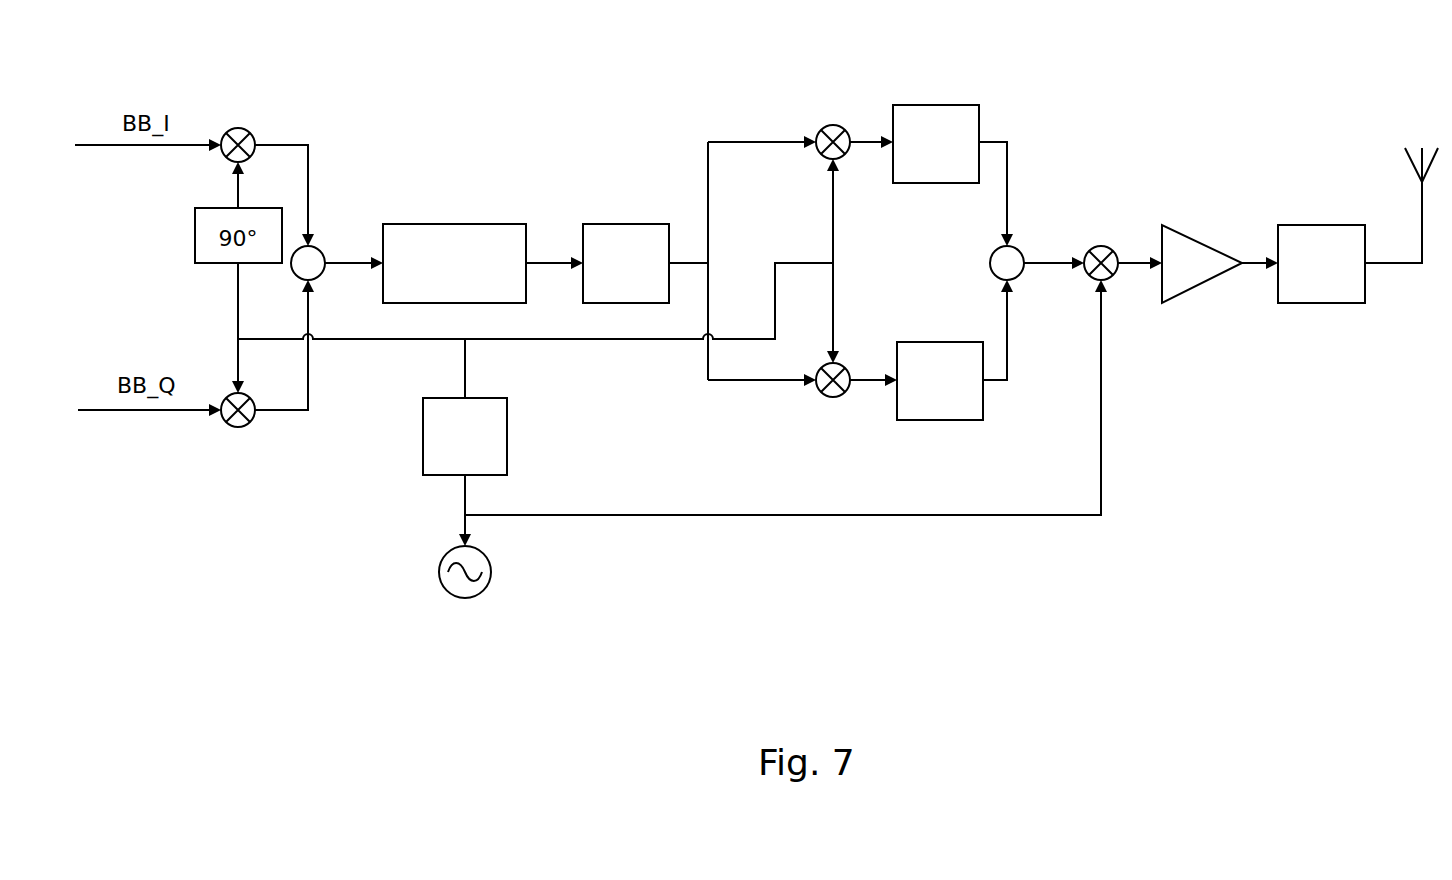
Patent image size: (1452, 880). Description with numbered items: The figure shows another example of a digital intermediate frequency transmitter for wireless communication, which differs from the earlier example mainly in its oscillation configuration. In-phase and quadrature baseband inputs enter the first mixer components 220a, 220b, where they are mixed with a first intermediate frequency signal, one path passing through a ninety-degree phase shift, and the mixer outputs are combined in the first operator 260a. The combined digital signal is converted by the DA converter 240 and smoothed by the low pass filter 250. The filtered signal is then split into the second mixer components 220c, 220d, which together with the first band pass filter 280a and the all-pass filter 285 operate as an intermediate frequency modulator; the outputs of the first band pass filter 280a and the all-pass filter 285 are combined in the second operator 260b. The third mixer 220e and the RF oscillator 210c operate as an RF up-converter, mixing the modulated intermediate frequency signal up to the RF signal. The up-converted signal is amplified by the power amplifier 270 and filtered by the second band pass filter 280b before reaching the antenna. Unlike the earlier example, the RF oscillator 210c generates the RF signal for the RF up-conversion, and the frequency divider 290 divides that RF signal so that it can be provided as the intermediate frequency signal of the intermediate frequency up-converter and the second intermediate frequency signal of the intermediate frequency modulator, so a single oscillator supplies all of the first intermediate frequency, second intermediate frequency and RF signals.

The RF oscillator 210c is at (485, 590).
The first mixer component 220a is at (240, 128).
The first mixer component 220b is at (250, 423).
The second mixer component 220c is at (836, 125).
The second mixer component 220d is at (848, 393).
The third mixer 220e is at (1103, 246).
The DA converter 240 is at (457, 224).
The low pass filter 250 is at (630, 224).
The first operator 260a is at (321, 276).
The second operator 260b is at (1020, 275).
The power amplifier 270 is at (1186, 235).
The first band pass filter 280a is at (940, 105).
The second band pass filter 280b is at (1318, 225).
The all-pass filter 285 is at (975, 420).
The frequency divider 290 is at (507, 455).